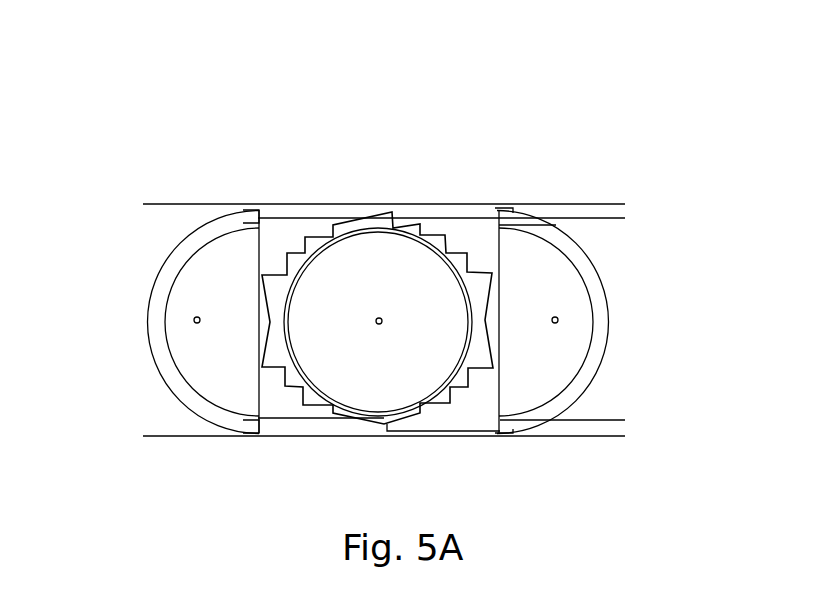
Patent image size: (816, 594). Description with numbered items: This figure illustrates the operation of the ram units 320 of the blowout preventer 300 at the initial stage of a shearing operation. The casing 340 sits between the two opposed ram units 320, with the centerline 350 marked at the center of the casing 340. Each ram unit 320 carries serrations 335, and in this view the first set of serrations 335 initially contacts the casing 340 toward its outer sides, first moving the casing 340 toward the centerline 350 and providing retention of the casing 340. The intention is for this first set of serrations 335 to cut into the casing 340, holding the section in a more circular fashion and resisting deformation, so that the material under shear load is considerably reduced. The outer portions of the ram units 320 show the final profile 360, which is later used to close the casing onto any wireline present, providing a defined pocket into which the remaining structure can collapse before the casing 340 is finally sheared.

The blowout preventer 300 is at (569, 98).
The ram units 320 is at (212, 204).
The serrations 335 is at (324, 236).
The casing 340 is at (410, 237).
The centerline 350 is at (382, 322).
The final profile 360 is at (268, 321).